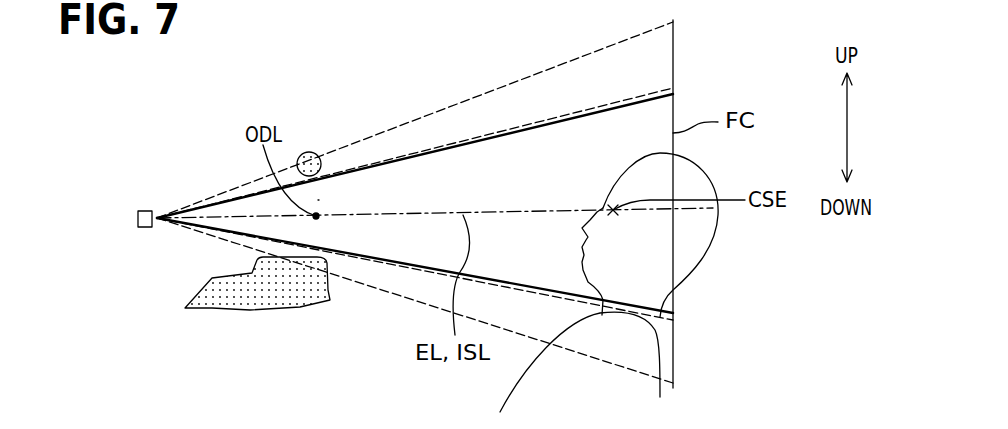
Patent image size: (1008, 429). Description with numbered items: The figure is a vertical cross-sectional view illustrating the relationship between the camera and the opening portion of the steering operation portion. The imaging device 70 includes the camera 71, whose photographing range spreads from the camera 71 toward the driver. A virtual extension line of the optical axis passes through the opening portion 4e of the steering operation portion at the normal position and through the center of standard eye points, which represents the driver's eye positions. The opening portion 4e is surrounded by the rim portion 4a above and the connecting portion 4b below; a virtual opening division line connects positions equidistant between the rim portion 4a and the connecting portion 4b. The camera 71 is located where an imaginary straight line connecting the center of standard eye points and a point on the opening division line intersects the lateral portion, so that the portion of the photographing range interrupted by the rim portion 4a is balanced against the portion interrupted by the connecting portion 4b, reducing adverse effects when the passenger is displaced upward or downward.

The imaging device 70 is at (101, 206).
The camera 71 is at (132, 212).
The rim portion 4a is at (305, 152).
The opening portion 4e is at (318, 200).
The connecting portion 4b is at (332, 290).